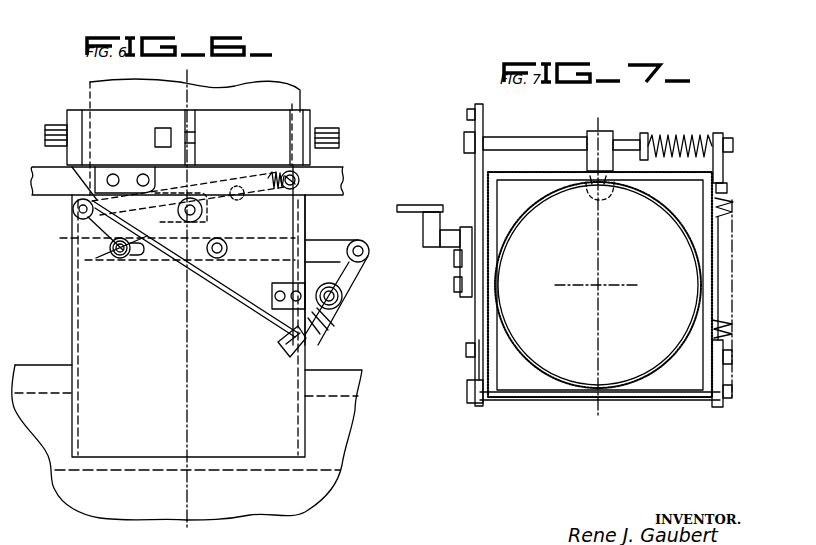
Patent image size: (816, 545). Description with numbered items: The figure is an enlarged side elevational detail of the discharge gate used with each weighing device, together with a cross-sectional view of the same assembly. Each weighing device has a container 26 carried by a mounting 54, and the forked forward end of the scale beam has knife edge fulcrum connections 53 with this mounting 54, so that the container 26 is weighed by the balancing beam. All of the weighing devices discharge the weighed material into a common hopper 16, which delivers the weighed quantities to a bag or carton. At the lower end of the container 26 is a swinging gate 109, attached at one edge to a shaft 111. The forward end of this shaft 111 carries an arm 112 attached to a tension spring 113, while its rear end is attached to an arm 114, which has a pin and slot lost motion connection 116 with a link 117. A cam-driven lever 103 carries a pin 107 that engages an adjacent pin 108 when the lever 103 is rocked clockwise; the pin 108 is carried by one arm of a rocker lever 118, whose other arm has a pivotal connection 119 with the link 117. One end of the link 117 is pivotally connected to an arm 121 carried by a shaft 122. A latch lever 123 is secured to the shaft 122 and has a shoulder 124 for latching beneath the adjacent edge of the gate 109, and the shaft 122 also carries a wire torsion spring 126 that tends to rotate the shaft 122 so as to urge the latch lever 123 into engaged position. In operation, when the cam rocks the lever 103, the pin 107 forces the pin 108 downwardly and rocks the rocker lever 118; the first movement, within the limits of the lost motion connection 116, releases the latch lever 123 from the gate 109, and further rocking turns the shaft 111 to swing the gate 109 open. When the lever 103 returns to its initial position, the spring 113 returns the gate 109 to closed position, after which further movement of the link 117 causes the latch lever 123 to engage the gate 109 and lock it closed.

In FIG. 6, the common hopper 16 is at (343, 425).
In FIG. 6, the container 26 is at (293, 99).
In FIG. 7, the container 26 is at (702, 255).
In FIG. 6, the knife edge fulcrum connections 53 is at (58, 124).
In FIG. 6, the mounting 54 is at (100, 110).
In FIG. 7, the lever 103 is at (408, 204).
In FIG. 7, the pin 107 is at (424, 222).
In FIG. 7, the pin 108 is at (456, 230).
In FIG. 6, the swinging gate 109 is at (226, 288).
In FIG. 7, the swinging gate 109 is at (562, 378).
In FIG. 6, the shaft 111 is at (73, 210).
In FIG. 7, the shaft 111 is at (608, 394).
In FIG. 6, the arm 112 is at (100, 226).
In FIG. 7, the arm 112 is at (724, 374).
In FIG. 6, the tension spring 113 is at (283, 196).
In FIG. 7, the tension spring 113 is at (728, 331).
In FIG. 6, the arm 114 is at (94, 242).
In FIG. 7, the arm 114 is at (468, 370).
In FIG. 6, the pin and slot lost motion connection 116 is at (128, 256).
In FIG. 7, the pin and slot lost motion connection 116 is at (466, 353).
In FIG. 6, the link 117 is at (322, 242).
In FIG. 7, the link 117 is at (475, 190).
In FIG. 6, the rocker lever 118 is at (216, 206).
In FIG. 7, the rocker lever 118 is at (470, 273).
In FIG. 6, the pivotal connection 119 is at (221, 256).
In FIG. 7, the pivotal connection 119 is at (455, 259).
In FIG. 6, the arm 121 is at (356, 275).
In FIG. 7, the arm 121 is at (466, 125).
In FIG. 6, the shaft 122 is at (341, 298).
In FIG. 7, the shaft 122 is at (544, 140).
In FIG. 6, the latch lever 123 is at (330, 315).
In FIG. 7, the latch lever 123 is at (604, 138).
In FIG. 6, the shoulder 124 is at (286, 338).
In FIG. 7, the shoulder 124 is at (612, 193).
In FIG. 7, the wire torsion spring 126 is at (700, 140).